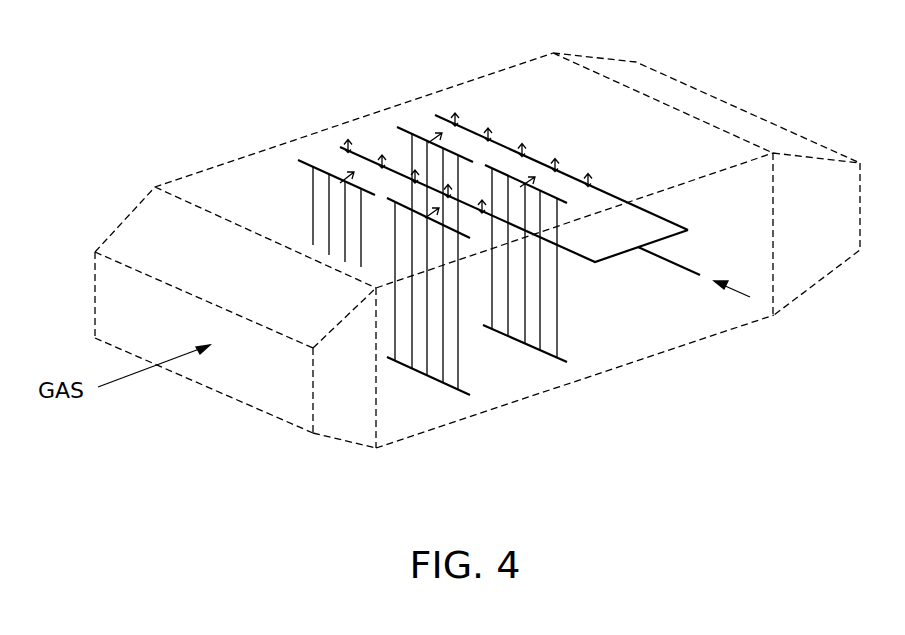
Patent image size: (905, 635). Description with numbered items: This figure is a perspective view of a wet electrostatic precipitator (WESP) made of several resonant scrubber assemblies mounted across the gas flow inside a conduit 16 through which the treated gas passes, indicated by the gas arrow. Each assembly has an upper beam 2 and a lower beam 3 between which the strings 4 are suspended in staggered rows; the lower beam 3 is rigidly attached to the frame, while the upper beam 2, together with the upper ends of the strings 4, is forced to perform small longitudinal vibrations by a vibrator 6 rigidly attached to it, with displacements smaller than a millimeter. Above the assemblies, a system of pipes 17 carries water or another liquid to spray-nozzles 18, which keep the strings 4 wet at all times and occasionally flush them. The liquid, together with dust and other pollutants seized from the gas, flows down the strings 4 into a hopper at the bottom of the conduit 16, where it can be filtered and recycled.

The conduit 16 is at (182, 178).
The upper beam 2 is at (308, 158).
The vibrator 6 is at (433, 135).
The lower beam 3 is at (465, 338).
The strings 4 is at (460, 348).
The spray-nozzles 18 is at (523, 153).
The system of pipes 17 is at (618, 255).